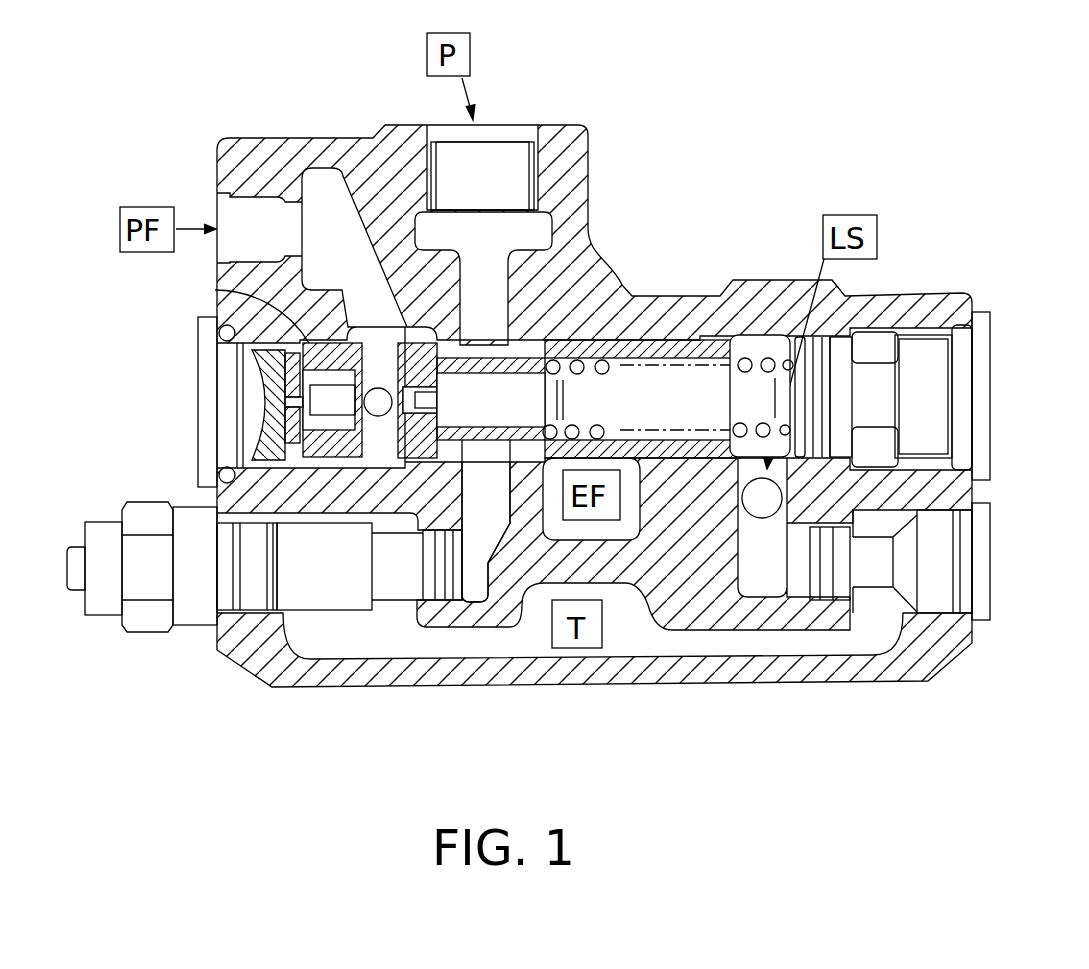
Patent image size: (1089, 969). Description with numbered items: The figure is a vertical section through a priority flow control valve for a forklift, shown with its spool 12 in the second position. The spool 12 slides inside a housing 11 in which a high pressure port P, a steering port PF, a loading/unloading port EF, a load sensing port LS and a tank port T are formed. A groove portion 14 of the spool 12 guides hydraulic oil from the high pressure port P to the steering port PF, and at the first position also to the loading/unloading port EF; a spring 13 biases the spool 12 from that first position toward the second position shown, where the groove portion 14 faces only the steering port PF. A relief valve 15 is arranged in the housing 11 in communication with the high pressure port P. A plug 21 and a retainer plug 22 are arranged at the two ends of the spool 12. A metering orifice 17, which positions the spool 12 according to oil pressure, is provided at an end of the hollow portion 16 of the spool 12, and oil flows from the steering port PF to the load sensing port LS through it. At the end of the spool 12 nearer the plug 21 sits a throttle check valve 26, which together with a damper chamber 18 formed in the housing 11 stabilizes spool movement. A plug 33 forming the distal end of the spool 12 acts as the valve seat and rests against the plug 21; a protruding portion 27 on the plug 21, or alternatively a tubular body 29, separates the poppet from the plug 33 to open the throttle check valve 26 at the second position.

The housing 11 is at (598, 148).
The spool 12 is at (683, 345).
The spring 13 is at (613, 358).
The groove portion 14 is at (453, 455).
The relief valve 15 is at (197, 605).
The hollow portion 16 is at (693, 395).
The metering orifice 17 is at (440, 402).
The damper chamber 18 is at (228, 325).
The plug 21 is at (200, 340).
The retainer plug 22 is at (980, 365).
The throttle check valve 26 is at (352, 468).
The protruding portion 27 is at (285, 402).
The tubular body 29 is at (294, 402).
The plug 33 is at (250, 440).